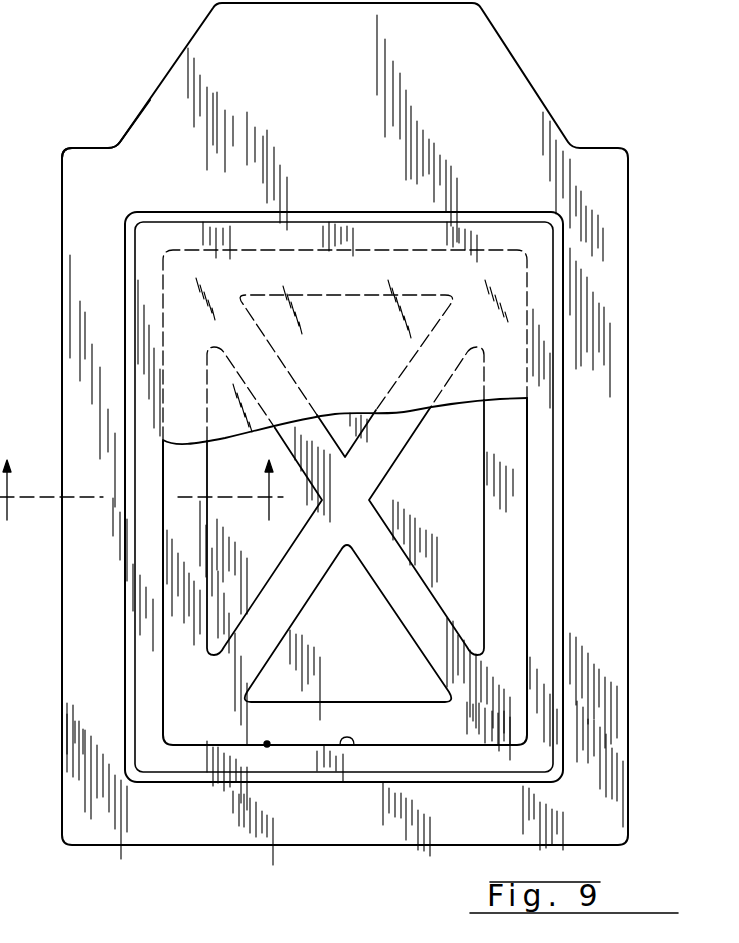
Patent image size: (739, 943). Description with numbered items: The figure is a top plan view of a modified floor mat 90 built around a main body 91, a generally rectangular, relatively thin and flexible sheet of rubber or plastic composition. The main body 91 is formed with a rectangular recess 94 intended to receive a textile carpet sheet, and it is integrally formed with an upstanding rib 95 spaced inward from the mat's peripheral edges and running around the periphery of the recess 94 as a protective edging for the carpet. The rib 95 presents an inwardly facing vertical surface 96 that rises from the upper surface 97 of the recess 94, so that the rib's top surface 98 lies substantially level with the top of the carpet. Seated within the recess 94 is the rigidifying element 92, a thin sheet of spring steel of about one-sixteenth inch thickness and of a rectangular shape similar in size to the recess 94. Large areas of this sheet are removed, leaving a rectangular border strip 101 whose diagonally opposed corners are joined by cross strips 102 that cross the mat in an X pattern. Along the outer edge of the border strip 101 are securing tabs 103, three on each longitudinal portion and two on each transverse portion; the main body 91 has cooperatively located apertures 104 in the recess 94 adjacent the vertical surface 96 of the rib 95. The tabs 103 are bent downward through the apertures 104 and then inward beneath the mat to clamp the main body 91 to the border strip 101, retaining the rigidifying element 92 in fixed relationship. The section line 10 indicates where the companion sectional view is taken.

The floor mat 90 is at (538, 81).
The main body 91 is at (100, 163).
The upstanding rib 95 is at (247, 233).
The rigidifying element 92 is at (512, 627).
The recess 94 is at (465, 443).
The cross strips 102 is at (403, 600).
The upper surface 97 is at (445, 497).
The border strip 101 is at (513, 568).
The apertures 104 is at (530, 683).
The top surface 98 is at (252, 760).
The securing tabs 103 is at (267, 746).
The vertical surface 96 is at (344, 746).
The section line 10- 10 is at (141, 491).